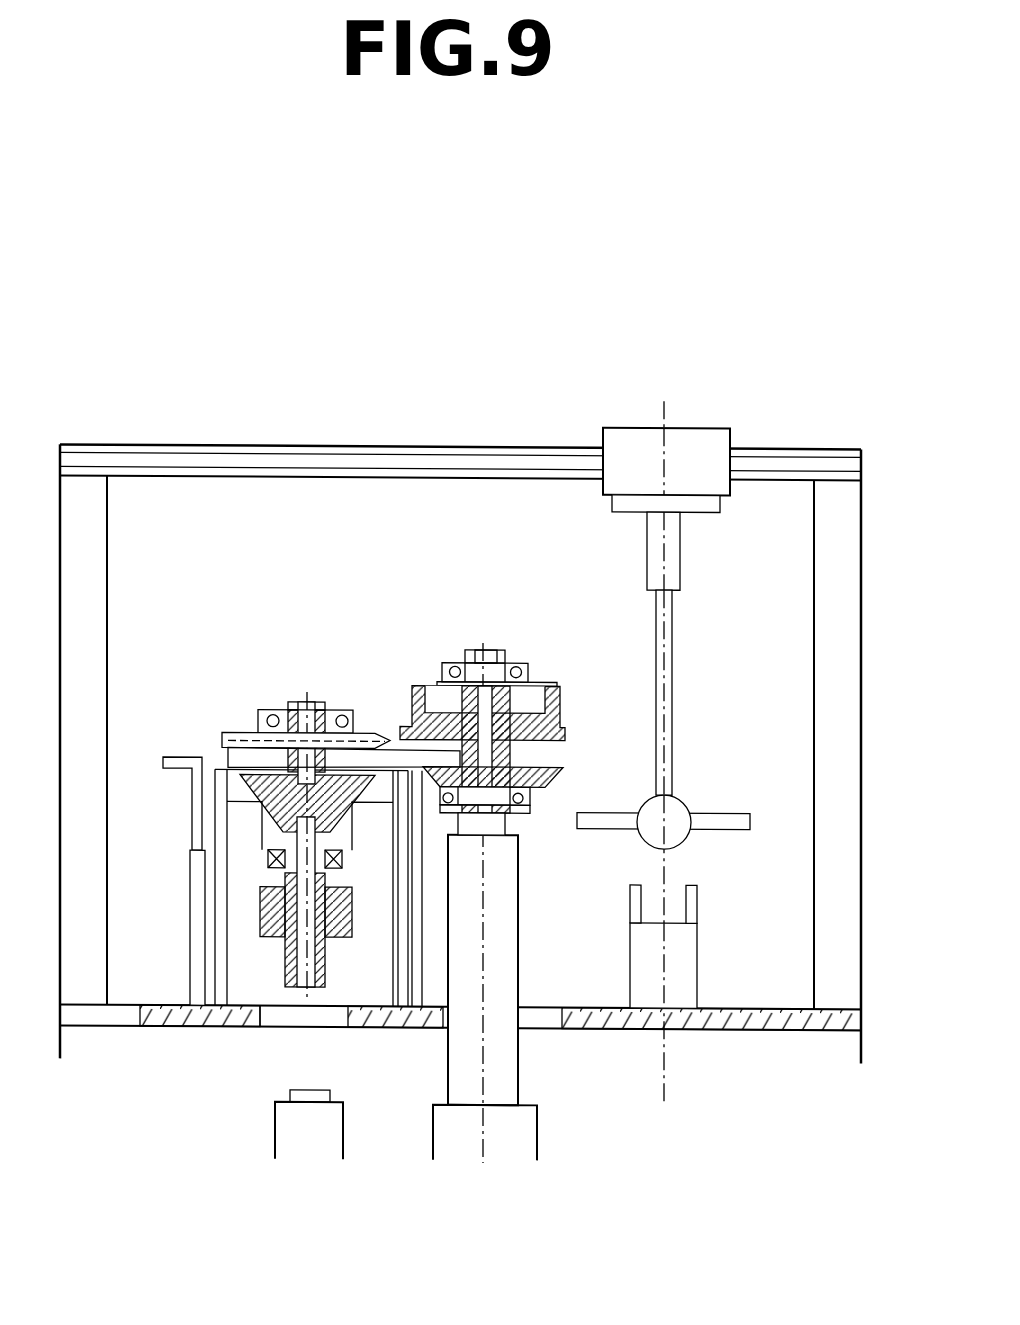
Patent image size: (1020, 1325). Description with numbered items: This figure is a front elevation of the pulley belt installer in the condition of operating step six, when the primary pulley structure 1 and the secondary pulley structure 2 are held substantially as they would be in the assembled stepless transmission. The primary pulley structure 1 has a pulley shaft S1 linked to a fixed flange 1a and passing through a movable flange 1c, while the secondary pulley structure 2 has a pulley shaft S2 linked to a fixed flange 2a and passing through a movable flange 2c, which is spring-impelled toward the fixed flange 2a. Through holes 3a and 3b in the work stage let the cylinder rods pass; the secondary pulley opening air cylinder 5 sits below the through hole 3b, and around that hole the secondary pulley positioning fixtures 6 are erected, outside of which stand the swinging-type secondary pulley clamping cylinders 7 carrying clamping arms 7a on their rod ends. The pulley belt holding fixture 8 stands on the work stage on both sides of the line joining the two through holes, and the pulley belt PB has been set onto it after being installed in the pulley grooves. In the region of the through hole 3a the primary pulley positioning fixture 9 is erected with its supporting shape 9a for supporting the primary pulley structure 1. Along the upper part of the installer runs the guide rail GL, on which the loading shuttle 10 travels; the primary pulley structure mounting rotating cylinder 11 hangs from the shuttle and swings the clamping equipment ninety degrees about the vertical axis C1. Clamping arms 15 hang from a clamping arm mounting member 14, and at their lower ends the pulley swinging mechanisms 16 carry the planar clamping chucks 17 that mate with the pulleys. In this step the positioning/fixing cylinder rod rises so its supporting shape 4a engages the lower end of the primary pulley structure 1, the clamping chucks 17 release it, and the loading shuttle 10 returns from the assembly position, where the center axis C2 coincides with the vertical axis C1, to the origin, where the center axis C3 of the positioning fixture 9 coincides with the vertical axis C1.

The primary pulley structure 1 is at (518, 724).
The fixed flange 1a is at (555, 775).
The movable flange 1c is at (557, 731).
The secondary pulley structure 2 is at (311, 813).
The fixed flange 2a is at (228, 739).
The movable flange 2c is at (270, 878).
The through hole 3a is at (443, 1024).
The through hole 3b is at (270, 1024).
The supporting shape 4a is at (522, 829).
The secondary pulley opening air cylinder 5 is at (345, 1118).
The secondary pulley positioning fixtures 6 is at (218, 944).
The secondary pulley clamping cylinders 7 is at (168, 838).
The clamping arms 7a is at (176, 755).
The pulley belt holding fixture 8 is at (422, 942).
The primary pulley positioning fixture 9 is at (702, 966).
The supporting shape 9a is at (698, 901).
The loading shuttle 10 is at (676, 424).
The primary pulley structure mounting rotating cylinder 11 is at (722, 500).
The clamping arm mounting member 14 is at (665, 556).
The clamping arms 15 is at (665, 646).
The pulley swinging mechanism 16 is at (678, 832).
The clamping chuck 17 is at (728, 822).
The vertical axis C1 is at (660, 401).
The center axis C2 is at (483, 1070).
The center axis C3 is at (664, 1069).
The guide rail GL is at (792, 445).
The pulley belt PB is at (228, 757).
The pulley shaft S1 is at (535, 687).
The pulley shaft S2 is at (318, 710).